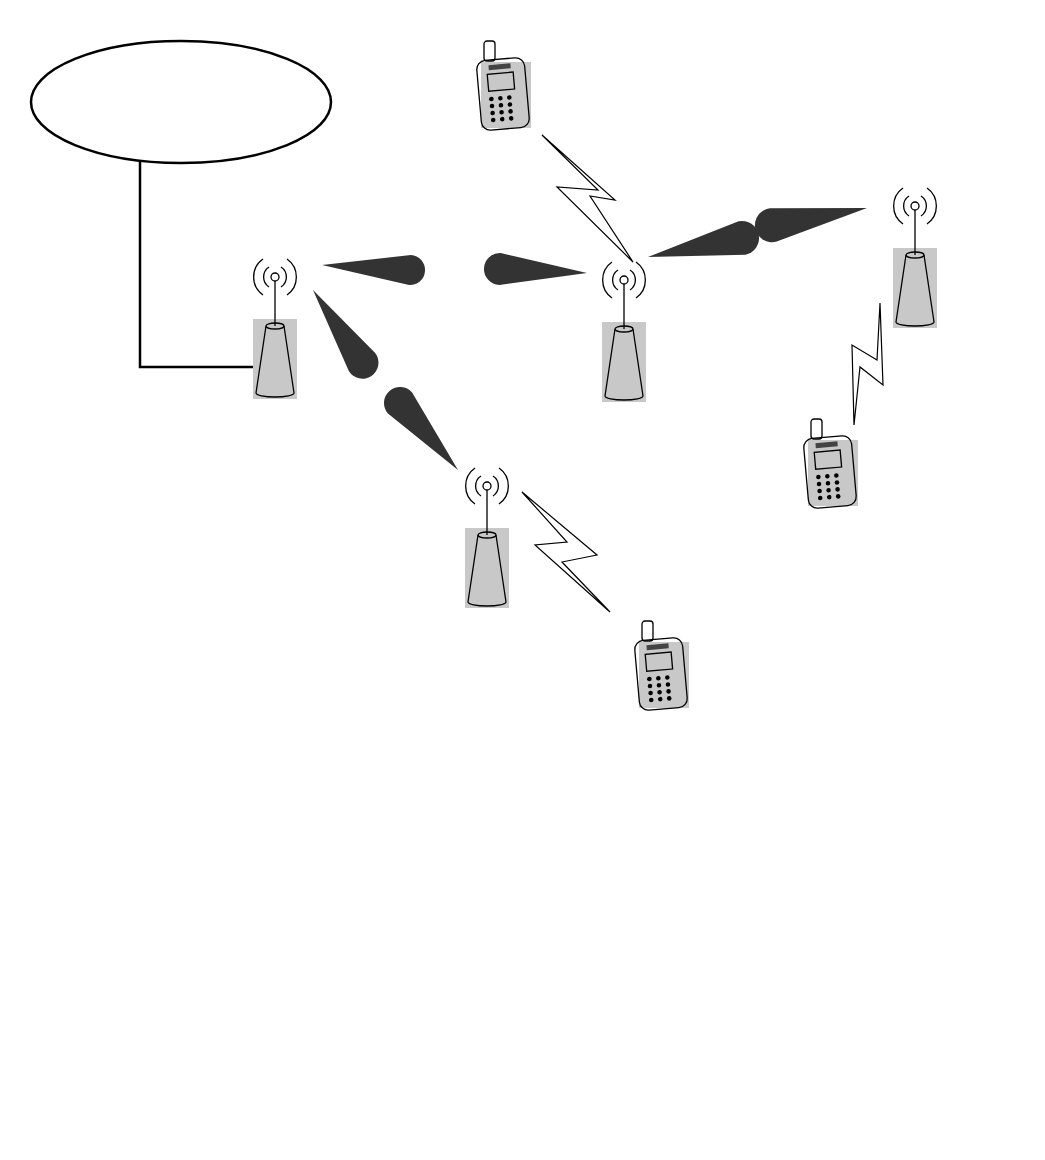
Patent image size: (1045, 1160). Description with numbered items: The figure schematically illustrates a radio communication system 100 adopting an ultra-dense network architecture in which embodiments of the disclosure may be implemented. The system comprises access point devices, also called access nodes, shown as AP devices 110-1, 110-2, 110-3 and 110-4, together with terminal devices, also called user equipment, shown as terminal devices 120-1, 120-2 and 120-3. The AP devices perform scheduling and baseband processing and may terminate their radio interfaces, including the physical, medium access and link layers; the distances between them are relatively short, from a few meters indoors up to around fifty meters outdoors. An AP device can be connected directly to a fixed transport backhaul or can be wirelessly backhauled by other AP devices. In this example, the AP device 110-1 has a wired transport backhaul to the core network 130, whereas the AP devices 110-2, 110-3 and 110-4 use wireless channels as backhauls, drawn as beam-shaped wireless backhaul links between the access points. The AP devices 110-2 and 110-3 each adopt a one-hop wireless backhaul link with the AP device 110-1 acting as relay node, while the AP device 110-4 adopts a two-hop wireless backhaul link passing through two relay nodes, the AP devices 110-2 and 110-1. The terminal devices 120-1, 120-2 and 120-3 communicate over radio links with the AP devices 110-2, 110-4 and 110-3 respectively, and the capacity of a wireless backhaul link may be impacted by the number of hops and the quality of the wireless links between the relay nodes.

The radio communication system 100 is at (945, 875).
The core network 130 is at (222, 44).
The AP device 110-1 is at (268, 320).
The AP device 110-2 is at (612, 350).
The AP device 110-3 is at (473, 560).
The AP device 110-4 is at (897, 280).
The terminal device 120-1 is at (477, 93).
The terminal device 120-2 is at (806, 444).
The terminal device 120-3 is at (638, 682).